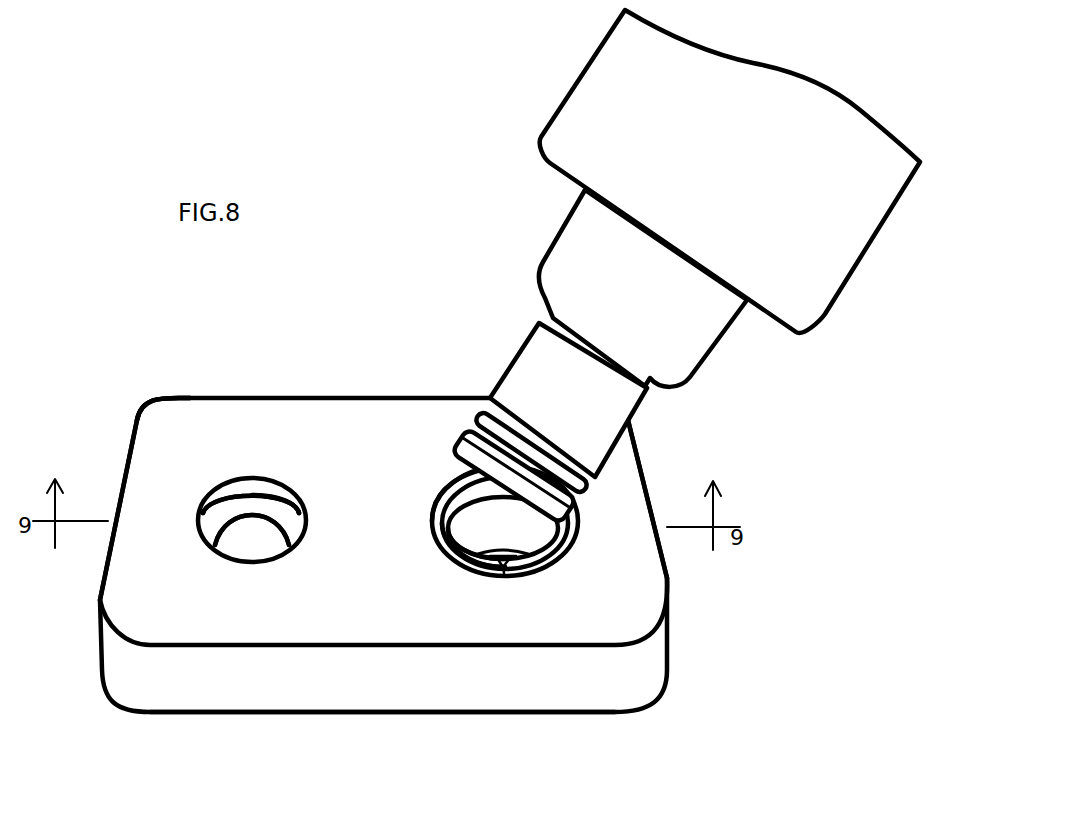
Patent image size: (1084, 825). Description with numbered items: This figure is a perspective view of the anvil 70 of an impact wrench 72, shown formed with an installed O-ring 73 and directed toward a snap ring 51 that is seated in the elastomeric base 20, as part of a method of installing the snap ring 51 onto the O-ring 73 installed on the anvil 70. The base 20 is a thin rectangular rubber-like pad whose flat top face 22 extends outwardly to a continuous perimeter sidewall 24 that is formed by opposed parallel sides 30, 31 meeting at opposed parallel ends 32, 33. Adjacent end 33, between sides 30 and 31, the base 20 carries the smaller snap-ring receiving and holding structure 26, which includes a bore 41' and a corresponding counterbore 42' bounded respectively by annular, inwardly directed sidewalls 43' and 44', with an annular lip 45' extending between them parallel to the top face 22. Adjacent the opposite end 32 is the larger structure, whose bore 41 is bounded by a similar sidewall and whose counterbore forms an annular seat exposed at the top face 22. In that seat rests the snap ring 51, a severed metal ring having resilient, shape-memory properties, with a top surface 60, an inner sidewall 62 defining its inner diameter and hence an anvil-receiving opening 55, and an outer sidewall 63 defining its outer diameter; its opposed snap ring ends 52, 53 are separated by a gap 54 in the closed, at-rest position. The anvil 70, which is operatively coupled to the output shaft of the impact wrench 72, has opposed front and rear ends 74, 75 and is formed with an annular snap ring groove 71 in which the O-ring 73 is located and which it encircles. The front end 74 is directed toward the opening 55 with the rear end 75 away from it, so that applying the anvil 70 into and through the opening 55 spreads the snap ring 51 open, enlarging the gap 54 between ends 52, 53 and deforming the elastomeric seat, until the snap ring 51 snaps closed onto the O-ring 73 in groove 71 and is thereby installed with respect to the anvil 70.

The base 20 is at (199, 417).
The top face 22 is at (145, 428).
The sidewall 24 is at (102, 650).
The snap-ring receiving and holding structure 26 is at (226, 562).
The side 30 is at (253, 397).
The side 31 is at (190, 686).
The end 32 is at (672, 580).
The end 33 is at (98, 575).
The bore 41 is at (523, 557).
The bore 41' is at (252, 544).
The counterbore 42' is at (251, 470).
The sidewall 43' is at (272, 561).
The sidewall 44' is at (290, 478).
The lip 45' is at (227, 490).
The snap ring 51 is at (455, 560).
The snap ring end 52 is at (495, 574).
The snap ring end 53 is at (506, 575).
The gap 54 is at (500, 564).
The anvil-receiving opening 55 is at (477, 532).
The top surface 60 is at (437, 492).
The inner sidewall 62 is at (464, 482).
The outer sidewall 63 is at (438, 498).
The anvil 70 is at (448, 398).
The snap ring groove 71 is at (605, 478).
The impact wrench 72 is at (554, 117).
The O-ring 73 is at (594, 488).
The front end 74 is at (470, 412).
The rear end 75 is at (550, 313).